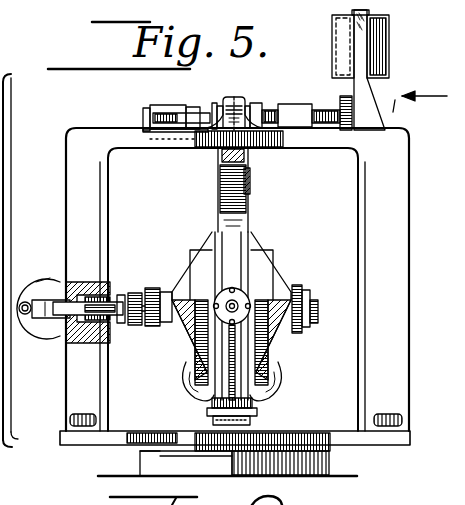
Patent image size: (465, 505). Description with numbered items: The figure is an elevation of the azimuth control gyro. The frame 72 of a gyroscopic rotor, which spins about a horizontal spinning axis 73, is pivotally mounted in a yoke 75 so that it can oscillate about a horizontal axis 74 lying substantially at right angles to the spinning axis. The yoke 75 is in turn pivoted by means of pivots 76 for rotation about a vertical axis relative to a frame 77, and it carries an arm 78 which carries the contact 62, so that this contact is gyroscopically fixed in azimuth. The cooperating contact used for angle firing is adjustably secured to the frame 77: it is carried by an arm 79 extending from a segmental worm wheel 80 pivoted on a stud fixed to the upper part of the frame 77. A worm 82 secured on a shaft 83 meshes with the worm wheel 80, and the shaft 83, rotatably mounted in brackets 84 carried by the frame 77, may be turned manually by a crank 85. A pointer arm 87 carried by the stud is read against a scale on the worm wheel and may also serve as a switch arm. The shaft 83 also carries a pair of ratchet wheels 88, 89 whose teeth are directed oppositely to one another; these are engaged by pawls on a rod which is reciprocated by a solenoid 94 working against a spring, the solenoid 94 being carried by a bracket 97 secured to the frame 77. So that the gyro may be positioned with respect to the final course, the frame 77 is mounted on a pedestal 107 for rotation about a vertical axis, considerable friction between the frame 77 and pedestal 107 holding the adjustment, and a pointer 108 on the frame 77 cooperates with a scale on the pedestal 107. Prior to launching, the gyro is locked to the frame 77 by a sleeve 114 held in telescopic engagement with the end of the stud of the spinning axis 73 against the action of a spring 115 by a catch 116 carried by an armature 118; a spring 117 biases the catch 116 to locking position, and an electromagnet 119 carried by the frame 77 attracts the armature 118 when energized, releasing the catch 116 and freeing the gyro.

The contact 62 is at (285, 139).
The frame 72 is at (231, 316).
The horizontal spinning axis 73 is at (155, 280).
The horizontal axis 74 is at (240, 298).
The yoke 75 is at (200, 380).
The pivots 76 is at (250, 181).
The frame 77 is at (235, 289).
The arm 78 is at (230, 152).
The arm 79 is at (233, 97).
The segmental worm wheel 80 is at (168, 118).
The worm 82 is at (258, 106).
The shaft 83 is at (200, 110).
The brackets 84 is at (170, 104).
The crank 85 is at (143, 113).
The pointer arm 87 is at (238, 100).
The ratchet wheel 88 is at (371, 86).
The ratchet wheel 89 is at (417, 96).
The solenoid 94 is at (390, 34).
The bracket 97 is at (359, 92).
The pedestal 107 is at (330, 458).
The pointer 108 is at (227, 463).
The sleeve 114 is at (125, 325).
The spring 115 is at (88, 332).
The catch 116 is at (72, 322).
The spring 117 is at (30, 358).
The armature 118 is at (40, 302).
The electromagnet 119 is at (38, 297).